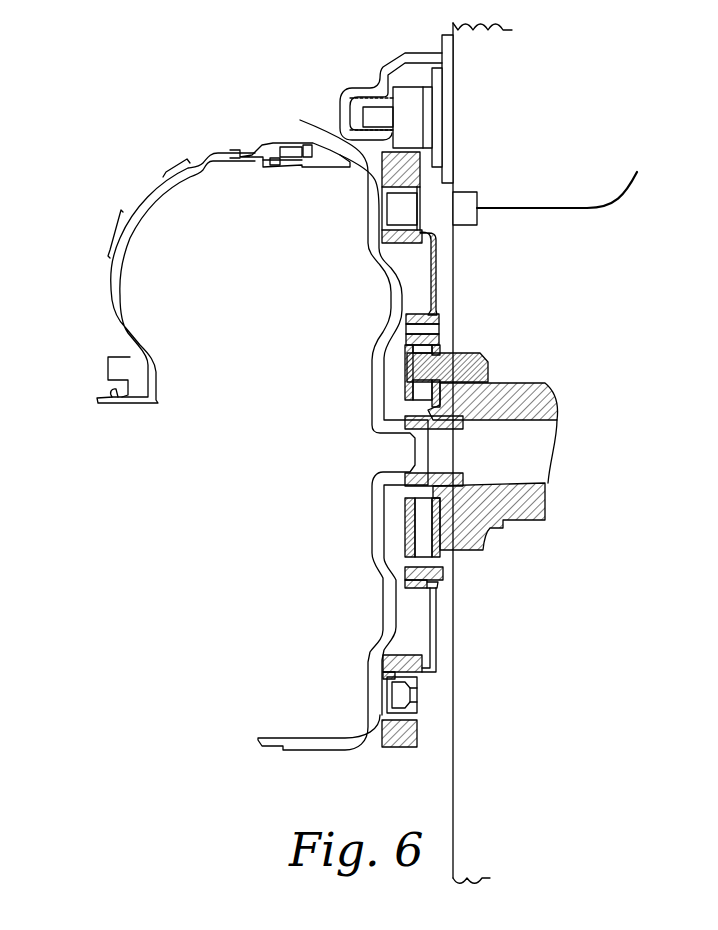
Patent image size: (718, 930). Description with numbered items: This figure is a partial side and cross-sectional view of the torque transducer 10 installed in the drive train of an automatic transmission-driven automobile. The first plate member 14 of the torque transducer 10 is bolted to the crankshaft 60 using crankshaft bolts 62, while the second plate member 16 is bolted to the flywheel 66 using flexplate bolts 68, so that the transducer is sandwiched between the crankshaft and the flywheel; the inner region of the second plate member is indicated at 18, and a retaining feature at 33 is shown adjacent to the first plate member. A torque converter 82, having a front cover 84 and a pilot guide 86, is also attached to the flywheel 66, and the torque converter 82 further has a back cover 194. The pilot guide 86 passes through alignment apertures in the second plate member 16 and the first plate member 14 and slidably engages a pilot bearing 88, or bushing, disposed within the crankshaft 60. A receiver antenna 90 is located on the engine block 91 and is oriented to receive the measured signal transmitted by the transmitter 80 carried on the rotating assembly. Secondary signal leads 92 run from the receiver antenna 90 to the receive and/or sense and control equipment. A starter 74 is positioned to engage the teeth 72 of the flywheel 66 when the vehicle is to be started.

The torque transducer 10 is at (536, 453).
The first plate member 14 is at (440, 348).
The second plate member 16 is at (405, 522).
The bearing inner portion 18 is at (425, 548).
The bearing retainer 33 is at (438, 318).
The crankshaft 60 is at (547, 402).
The crankshaft bolts 62 is at (482, 355).
The flywheel 66 is at (435, 270).
The flexplate bolts 68 is at (440, 582).
The teeth 72 is at (300, 120).
The starter 74 is at (387, 62).
The transmitter 80 is at (392, 210).
The torque converter 82 is at (166, 138).
The front cover 84 is at (392, 295).
The pilot guide 86 is at (412, 440).
The pilot bearing 88 is at (463, 428).
The receiver antenna 90 is at (468, 202).
The engine block 91 is at (520, 681).
The secondary signal leads 92 is at (610, 202).
The back cover 194 is at (108, 272).